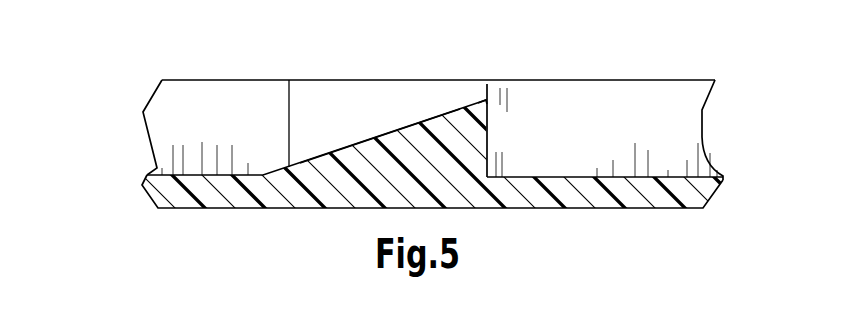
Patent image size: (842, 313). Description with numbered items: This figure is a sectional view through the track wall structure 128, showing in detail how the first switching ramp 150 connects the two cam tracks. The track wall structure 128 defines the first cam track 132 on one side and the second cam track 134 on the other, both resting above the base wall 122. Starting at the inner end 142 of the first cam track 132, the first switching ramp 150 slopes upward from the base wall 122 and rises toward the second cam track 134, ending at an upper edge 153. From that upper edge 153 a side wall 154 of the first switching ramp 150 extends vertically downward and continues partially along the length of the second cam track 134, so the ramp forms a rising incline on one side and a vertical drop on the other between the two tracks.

The base wall 122 is at (167, 185).
The track wall structure 128 is at (214, 56).
The first cam track 132 is at (220, 131).
The second cam track 134 is at (616, 131).
The inner end of the first cam track 142 is at (262, 173).
The first switching ramp 150 is at (365, 138).
The upper edge 153 is at (486, 101).
The side wall 154 is at (488, 122).